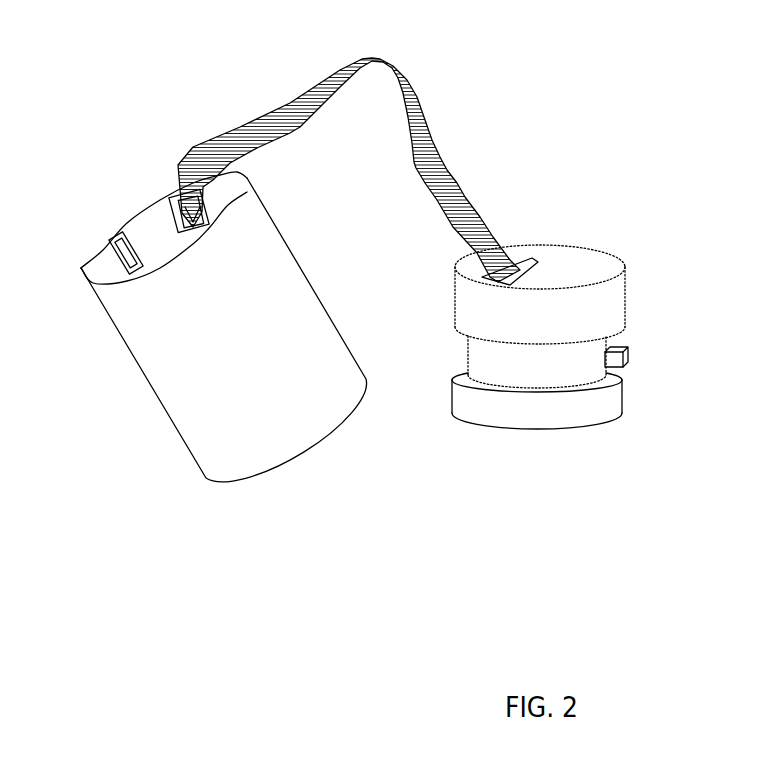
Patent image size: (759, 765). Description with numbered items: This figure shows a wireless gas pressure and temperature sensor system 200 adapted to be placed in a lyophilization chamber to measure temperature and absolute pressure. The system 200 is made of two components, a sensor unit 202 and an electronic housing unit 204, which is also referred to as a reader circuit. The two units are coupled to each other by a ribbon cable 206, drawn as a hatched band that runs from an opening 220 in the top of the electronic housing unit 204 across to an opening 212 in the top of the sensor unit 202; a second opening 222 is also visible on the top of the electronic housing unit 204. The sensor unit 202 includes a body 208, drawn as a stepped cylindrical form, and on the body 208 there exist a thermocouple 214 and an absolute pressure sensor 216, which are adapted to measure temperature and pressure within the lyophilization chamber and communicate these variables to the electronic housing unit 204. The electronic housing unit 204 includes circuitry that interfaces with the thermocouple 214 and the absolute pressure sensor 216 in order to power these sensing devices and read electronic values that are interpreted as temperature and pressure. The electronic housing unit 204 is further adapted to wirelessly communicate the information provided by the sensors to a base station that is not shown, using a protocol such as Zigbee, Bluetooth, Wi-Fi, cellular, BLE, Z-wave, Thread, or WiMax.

The wireless gas pressure and temperature sensor system 200 is at (124, 45).
The sensor unit 202 is at (438, 310).
The electronic housing unit 204 is at (128, 215).
The ribbon cable 206 is at (221, 133).
The body 208 is at (625, 282).
The strap slot 212 is at (535, 247).
The thermocouple 214 is at (607, 340).
The absolute pressure sensor 216 is at (622, 366).
The strap aperture 220 is at (183, 249).
The slot 222 is at (137, 240).